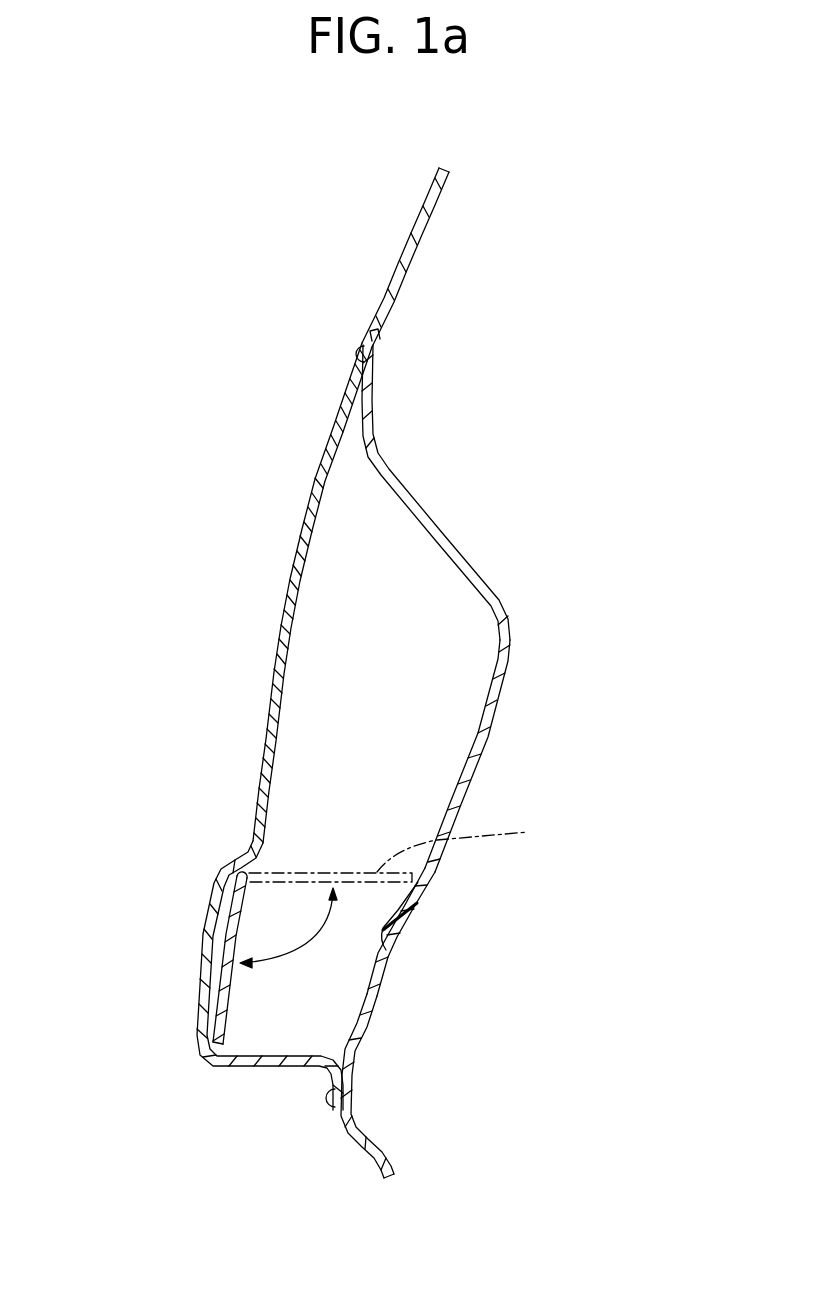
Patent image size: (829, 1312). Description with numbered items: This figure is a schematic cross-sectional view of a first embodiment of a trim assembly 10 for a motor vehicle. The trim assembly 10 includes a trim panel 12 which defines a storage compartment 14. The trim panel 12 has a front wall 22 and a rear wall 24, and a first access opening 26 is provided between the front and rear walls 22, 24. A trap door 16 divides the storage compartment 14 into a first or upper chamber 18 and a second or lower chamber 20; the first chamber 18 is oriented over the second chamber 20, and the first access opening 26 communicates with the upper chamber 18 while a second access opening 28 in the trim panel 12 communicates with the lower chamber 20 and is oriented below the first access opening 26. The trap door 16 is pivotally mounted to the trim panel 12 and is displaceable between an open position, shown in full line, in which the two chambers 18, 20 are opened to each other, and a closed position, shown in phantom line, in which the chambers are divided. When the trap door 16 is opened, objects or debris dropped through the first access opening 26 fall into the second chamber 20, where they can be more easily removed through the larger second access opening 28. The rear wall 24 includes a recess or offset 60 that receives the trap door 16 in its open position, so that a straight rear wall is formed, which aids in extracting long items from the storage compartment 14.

The trim assembly 10 is at (168, 310).
The trim panel 12 is at (405, 250).
The storage compartment 14 is at (350, 733).
The trap door 16 is at (100, 1050).
The first or upper chamber 18 is at (437, 750).
The second or lower chamber 20 is at (313, 977).
The front wall 22 is at (500, 685).
The rear wall 24 is at (311, 519).
The first access opening 26 is at (437, 538).
The second access opening 28 is at (367, 1003).
The recess or offset 60 is at (226, 932).